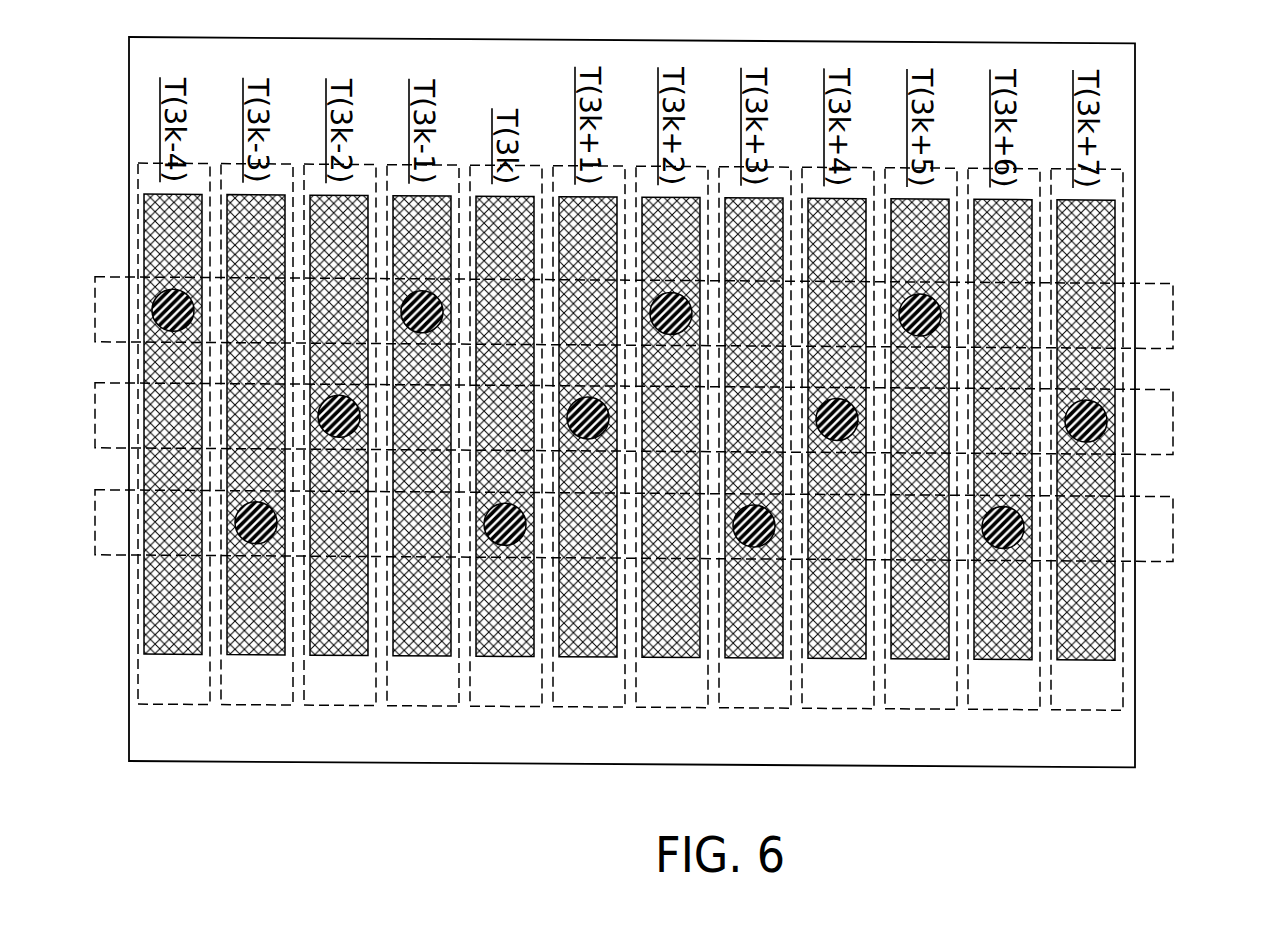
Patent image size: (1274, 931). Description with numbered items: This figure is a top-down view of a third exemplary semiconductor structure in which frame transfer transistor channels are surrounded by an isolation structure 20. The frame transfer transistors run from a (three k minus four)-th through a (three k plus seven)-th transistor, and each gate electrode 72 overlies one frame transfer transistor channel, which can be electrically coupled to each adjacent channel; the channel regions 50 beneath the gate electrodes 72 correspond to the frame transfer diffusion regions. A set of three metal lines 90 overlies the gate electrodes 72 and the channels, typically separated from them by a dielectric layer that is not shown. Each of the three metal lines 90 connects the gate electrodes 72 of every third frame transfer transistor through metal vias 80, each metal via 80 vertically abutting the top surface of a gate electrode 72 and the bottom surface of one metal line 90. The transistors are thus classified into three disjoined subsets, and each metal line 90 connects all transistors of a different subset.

The isolation structure 20 is at (558, 79).
The touch electrode region 50 is at (950, 615).
The gate electrode 72 is at (513, 619).
The metal via 80 is at (420, 330).
The metal line 90 is at (1173, 416).